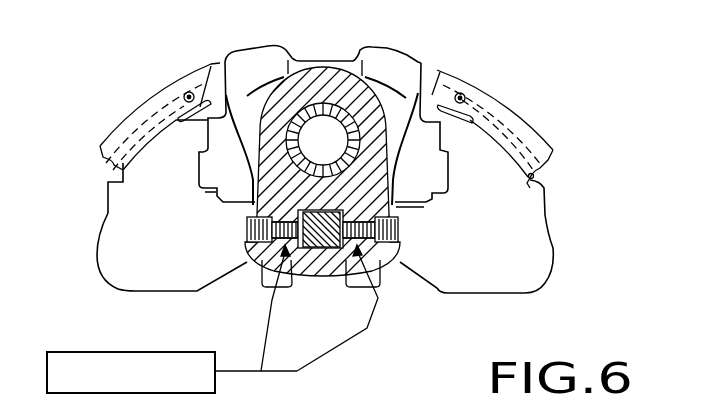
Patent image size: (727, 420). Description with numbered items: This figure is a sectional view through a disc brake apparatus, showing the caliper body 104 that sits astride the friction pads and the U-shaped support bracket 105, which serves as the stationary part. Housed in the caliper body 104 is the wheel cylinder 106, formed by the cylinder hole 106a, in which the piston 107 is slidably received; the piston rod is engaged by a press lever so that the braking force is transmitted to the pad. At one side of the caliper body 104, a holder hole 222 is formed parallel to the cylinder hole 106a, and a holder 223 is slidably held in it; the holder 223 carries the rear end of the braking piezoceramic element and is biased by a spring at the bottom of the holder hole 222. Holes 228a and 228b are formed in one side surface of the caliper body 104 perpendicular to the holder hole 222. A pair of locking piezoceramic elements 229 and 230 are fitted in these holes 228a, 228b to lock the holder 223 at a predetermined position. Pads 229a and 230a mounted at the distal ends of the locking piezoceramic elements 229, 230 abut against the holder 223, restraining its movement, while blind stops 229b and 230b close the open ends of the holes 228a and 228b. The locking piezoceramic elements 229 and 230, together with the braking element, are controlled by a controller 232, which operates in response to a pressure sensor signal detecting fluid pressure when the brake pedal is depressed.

The caliper body 104 is at (332, 82).
The support bracket 105 is at (146, 290).
The wheel cylinder 106 is at (313, 103).
The cylinder hole 106a is at (286, 146).
The piston 107 is at (365, 97).
The holder hole 222 is at (318, 249).
The holder 223 is at (329, 249).
The hole 228a is at (262, 270).
The hole 228b is at (393, 270).
The locking piezoceramic element 229 is at (265, 278).
The pad 229a is at (291, 245).
The blind stop 229b is at (247, 232).
The locking piezoceramic element 230 is at (384, 262).
The pad 230a is at (373, 305).
The blind stop 230b is at (398, 232).
The controller 232 is at (170, 352).